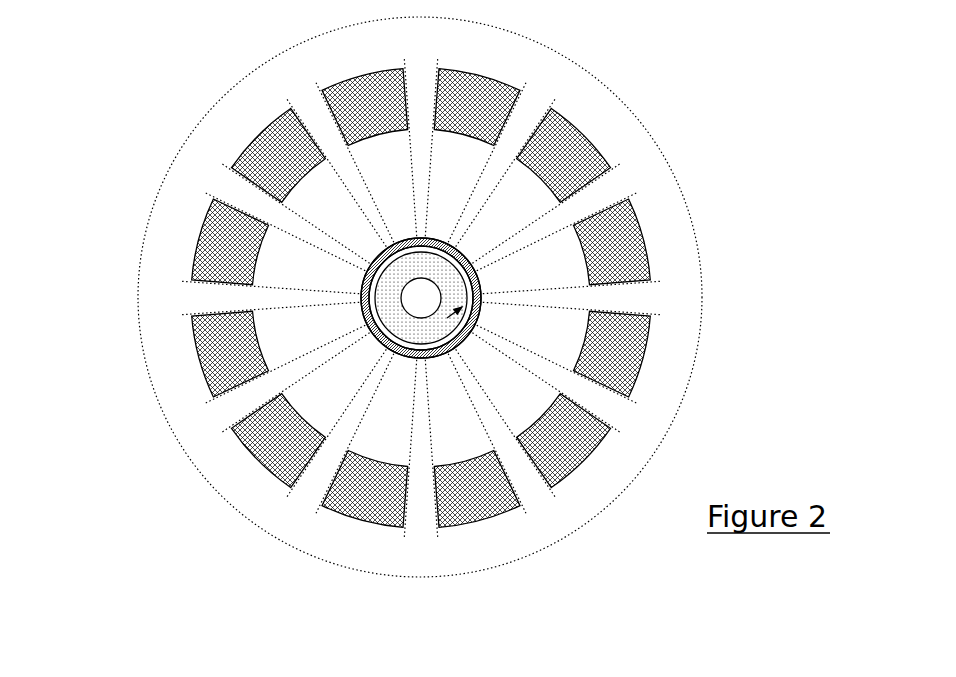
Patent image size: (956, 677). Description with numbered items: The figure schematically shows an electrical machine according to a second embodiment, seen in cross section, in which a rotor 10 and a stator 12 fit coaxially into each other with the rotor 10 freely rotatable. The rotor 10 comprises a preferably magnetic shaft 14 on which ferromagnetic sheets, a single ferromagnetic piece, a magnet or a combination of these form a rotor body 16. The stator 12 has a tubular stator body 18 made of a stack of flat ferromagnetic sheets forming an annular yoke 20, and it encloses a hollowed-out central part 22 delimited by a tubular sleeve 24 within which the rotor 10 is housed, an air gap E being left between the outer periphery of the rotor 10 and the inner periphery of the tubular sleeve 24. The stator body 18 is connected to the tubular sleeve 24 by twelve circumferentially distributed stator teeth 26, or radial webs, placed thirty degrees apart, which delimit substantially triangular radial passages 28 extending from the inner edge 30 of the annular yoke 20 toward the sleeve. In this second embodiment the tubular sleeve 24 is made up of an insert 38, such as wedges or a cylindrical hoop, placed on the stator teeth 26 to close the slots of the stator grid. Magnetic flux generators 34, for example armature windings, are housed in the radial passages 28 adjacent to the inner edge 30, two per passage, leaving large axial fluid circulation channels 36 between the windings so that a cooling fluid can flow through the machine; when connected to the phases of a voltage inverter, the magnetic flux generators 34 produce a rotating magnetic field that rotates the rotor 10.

The rotor 10 is at (387, 314).
The stator 12 is at (665, 145).
The shaft 14 is at (427, 290).
The rotor body 16 is at (427, 333).
The stator body 18 is at (683, 392).
The annular yoke 20 is at (678, 247).
The hollowed-out central part 22 is at (383, 250).
The tubular sleeve 24 is at (360, 280).
The stator teeth 26 is at (470, 210).
The radial passages 28 is at (280, 338).
The inner edge of annular yoke 30 is at (557, 136).
The magnetic flux generators 34 is at (383, 503).
The axial fluid circulation channels 36 is at (323, 413).
The insert 38 is at (482, 283).
The air gap E is at (477, 313).